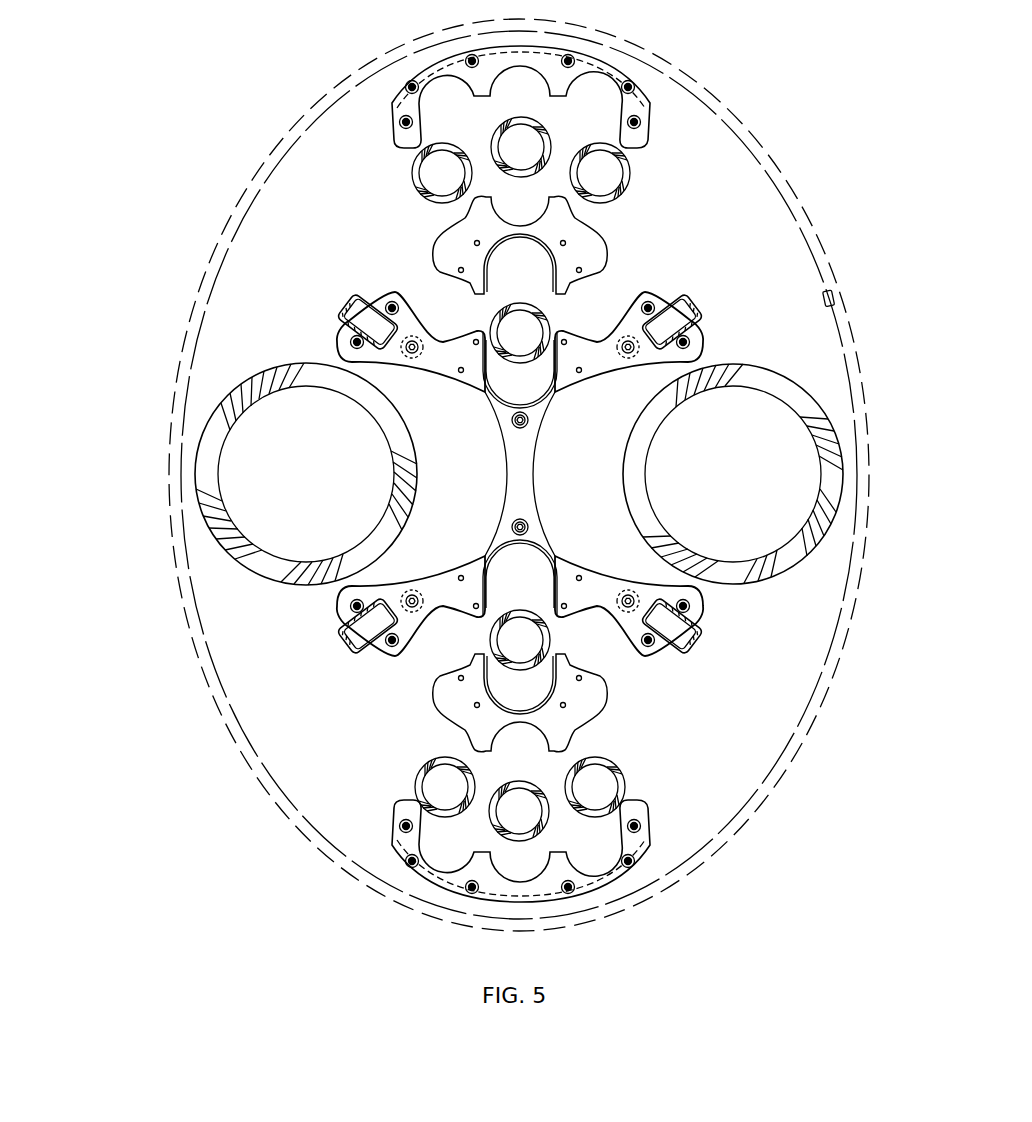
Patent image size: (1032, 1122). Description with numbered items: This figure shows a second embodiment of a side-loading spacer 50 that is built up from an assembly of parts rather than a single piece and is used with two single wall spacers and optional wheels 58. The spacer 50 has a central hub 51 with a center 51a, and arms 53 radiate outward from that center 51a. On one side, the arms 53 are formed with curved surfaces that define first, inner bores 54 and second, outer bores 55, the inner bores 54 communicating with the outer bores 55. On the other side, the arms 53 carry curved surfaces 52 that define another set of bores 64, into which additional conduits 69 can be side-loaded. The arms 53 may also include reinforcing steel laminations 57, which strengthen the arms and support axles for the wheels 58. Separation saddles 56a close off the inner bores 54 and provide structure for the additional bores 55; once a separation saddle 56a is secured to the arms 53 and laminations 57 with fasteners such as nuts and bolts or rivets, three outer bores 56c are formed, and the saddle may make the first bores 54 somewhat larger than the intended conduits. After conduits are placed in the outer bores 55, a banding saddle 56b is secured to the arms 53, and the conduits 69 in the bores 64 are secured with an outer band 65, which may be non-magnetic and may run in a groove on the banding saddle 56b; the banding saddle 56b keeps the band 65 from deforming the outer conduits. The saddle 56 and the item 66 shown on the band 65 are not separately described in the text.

The side-loading spacer 50 is at (120, 585).
The central hub 51 is at (533, 492).
The center 51a is at (525, 462).
The curved surfaces 52 is at (486, 508).
The arms 53 is at (452, 370).
The first bores 54 is at (507, 390).
The second bores 55 is at (422, 307).
The end plate 56 is at (533, 752).
The separation saddle 56a is at (600, 257).
The banding saddle 56b is at (600, 100).
The outer bores 56c is at (440, 100).
The laminations 57 is at (697, 603).
The wheels 58 is at (692, 636).
The bores 64 is at (478, 466).
The outer band 65 is at (840, 340).
The housing tab 66 is at (834, 298).
The additional conduits 69 is at (318, 487).